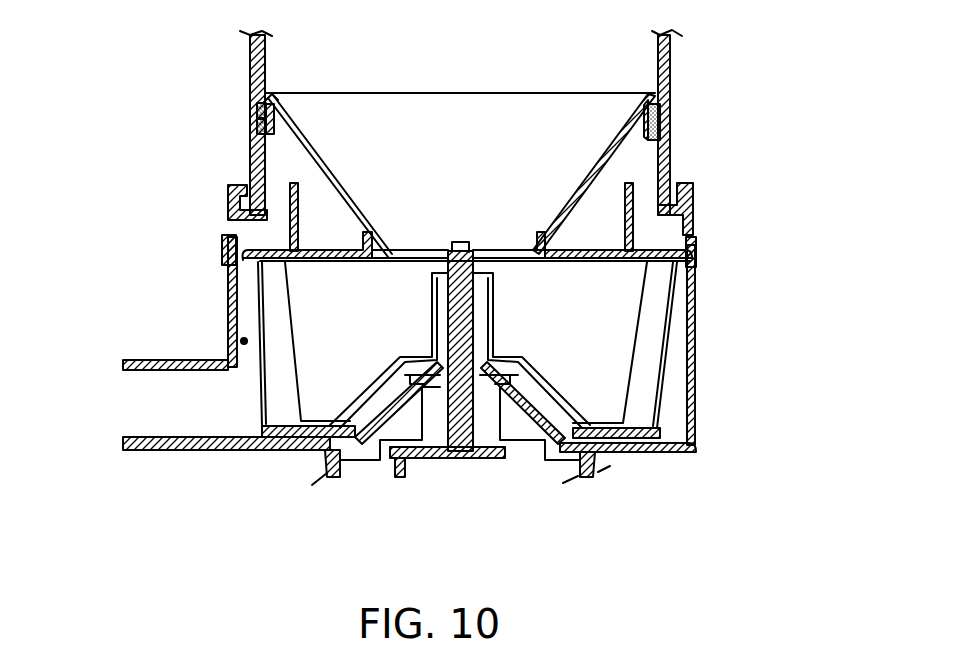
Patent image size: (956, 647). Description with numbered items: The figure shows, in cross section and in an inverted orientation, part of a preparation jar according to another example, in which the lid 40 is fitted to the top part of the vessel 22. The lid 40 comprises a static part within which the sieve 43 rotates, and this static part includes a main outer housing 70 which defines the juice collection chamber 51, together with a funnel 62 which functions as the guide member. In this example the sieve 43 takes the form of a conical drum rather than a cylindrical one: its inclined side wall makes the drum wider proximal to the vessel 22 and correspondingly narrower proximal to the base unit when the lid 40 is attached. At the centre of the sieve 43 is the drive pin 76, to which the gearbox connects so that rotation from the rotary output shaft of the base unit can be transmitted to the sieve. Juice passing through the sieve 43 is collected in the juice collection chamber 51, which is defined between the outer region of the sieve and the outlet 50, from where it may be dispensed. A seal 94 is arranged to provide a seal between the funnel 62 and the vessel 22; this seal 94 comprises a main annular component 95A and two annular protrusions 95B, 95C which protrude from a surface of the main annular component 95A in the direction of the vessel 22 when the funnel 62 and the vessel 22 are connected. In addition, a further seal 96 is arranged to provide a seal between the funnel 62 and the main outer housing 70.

The lid 40 is at (117, 122).
The vessel 22 is at (672, 40).
The funnel 62 is at (624, 142).
The main annular component 95A is at (272, 110).
The annular protrusion 95B is at (257, 105).
The annular protrusion 95C is at (257, 124).
The seal 94 is at (661, 108).
The further seal 96 is at (697, 236).
The main outer housing 70 is at (228, 300).
The juice collection chamber 51 is at (240, 341).
The outlet 50 is at (187, 446).
The sieve 43 is at (664, 357).
The drive pin 76 is at (458, 252).